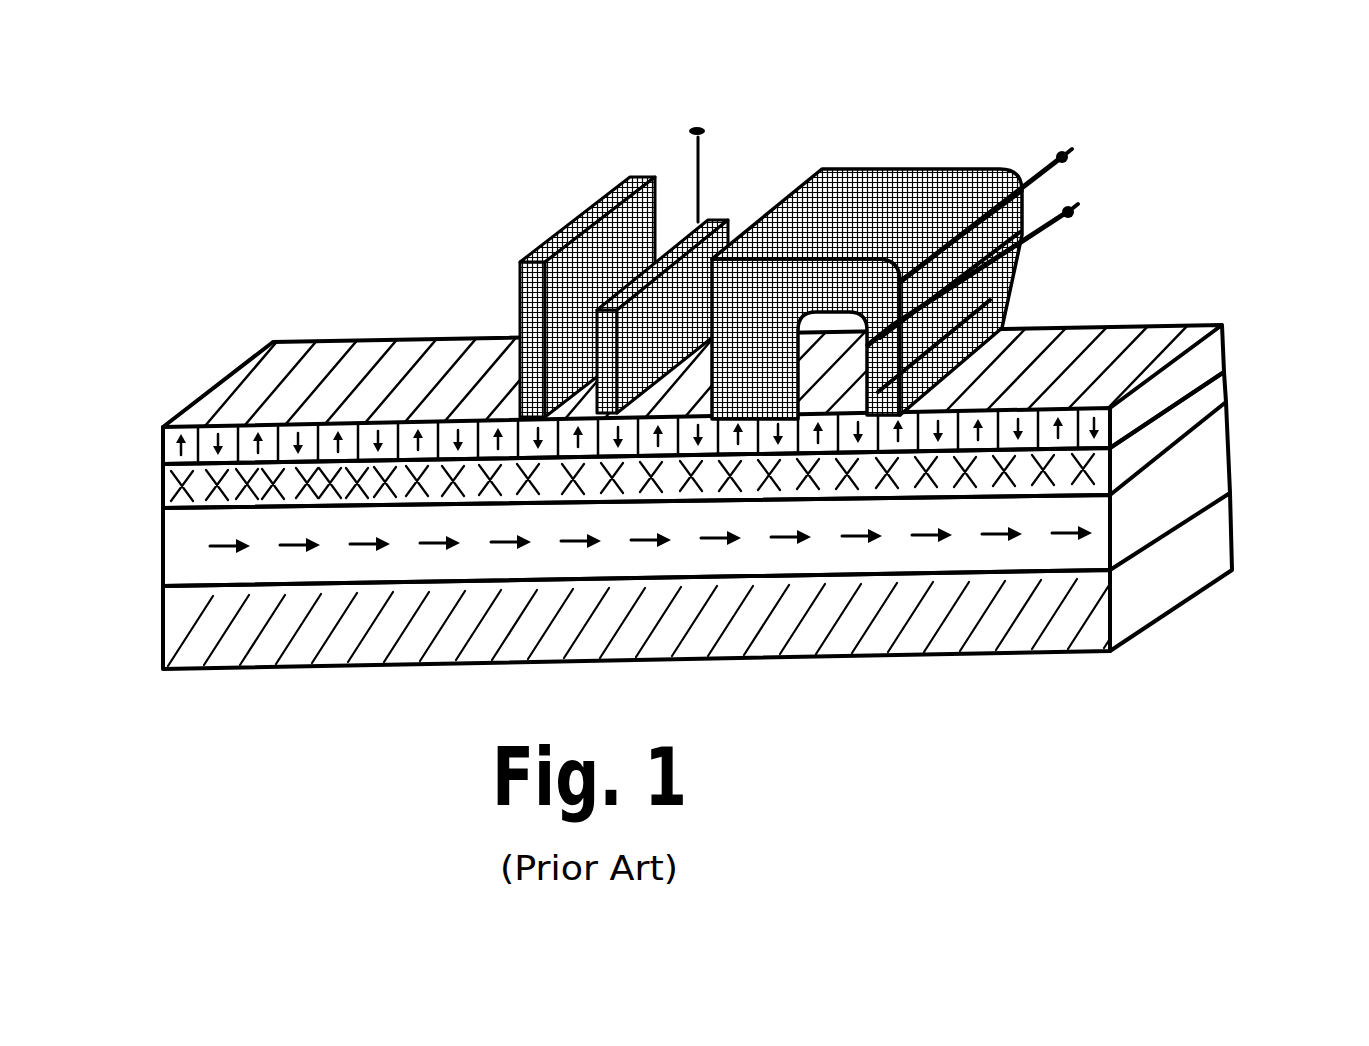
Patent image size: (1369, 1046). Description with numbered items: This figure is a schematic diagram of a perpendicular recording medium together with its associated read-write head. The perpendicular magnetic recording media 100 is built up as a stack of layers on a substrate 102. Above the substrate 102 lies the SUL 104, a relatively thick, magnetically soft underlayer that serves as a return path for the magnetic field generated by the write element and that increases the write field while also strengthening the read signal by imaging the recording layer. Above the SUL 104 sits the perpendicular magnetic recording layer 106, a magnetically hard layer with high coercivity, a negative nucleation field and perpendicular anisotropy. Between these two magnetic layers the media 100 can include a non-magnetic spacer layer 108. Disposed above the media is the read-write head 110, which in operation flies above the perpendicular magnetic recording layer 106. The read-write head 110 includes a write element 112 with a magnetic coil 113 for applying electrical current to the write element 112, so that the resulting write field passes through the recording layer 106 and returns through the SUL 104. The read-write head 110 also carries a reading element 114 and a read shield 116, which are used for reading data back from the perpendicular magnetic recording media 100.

The perpendicular magnetic recording media 100 is at (696, 366).
The substrate 102 is at (936, 623).
The SUL 104 is at (1171, 494).
The perpendicular magnetic recording layer 106 is at (1205, 362).
The non-magnetic spacer layer 108 is at (1212, 400).
The read-write head 110 is at (833, 214).
The write element 112 is at (893, 169).
The magnetic coil 113 is at (1080, 148).
The reading element 114 is at (727, 212).
The read shield 116 is at (578, 213).